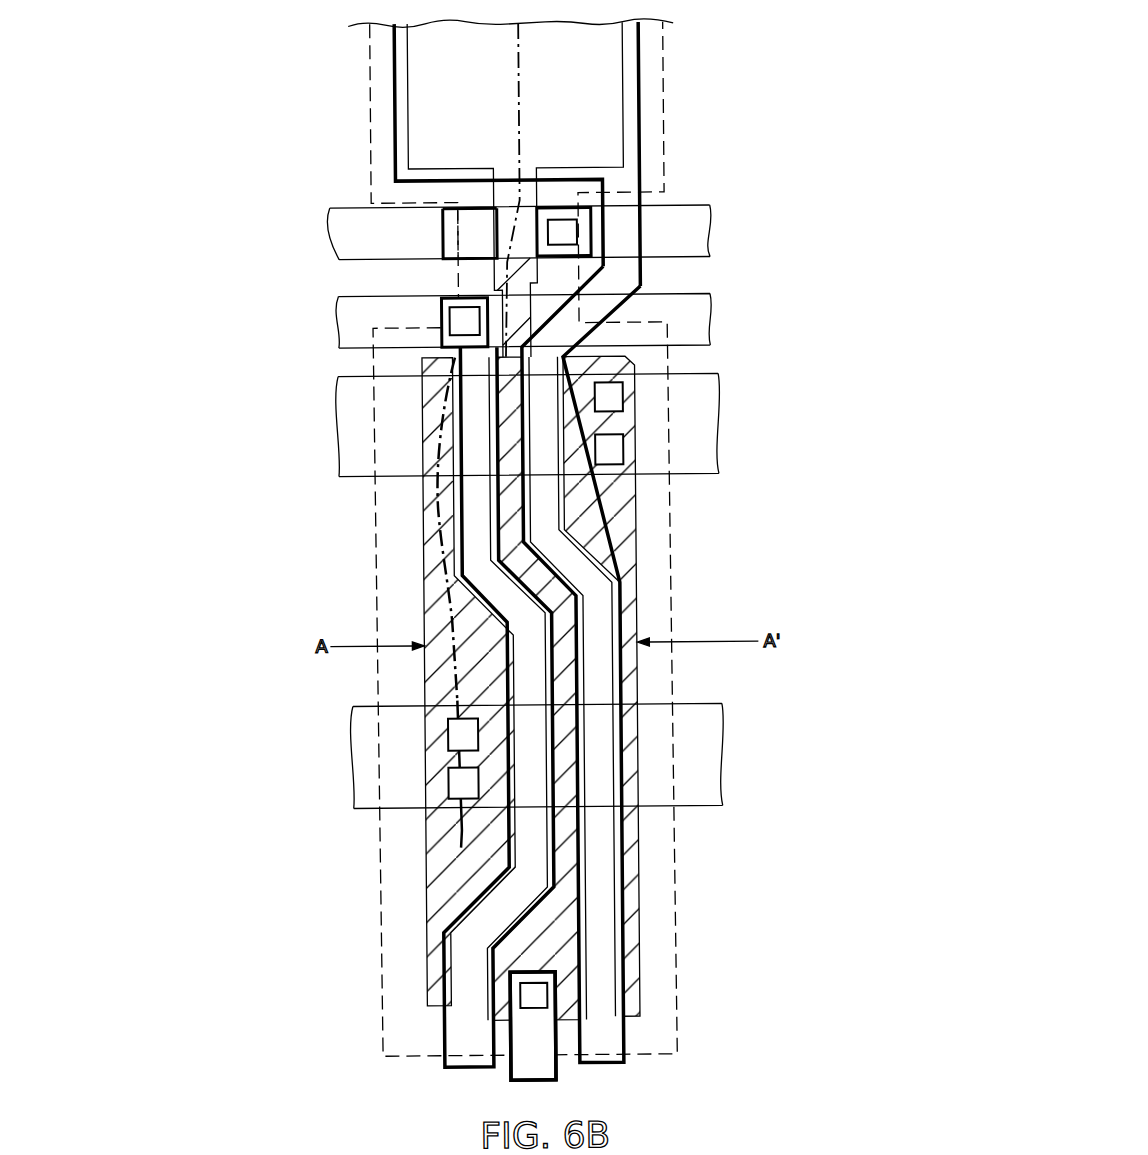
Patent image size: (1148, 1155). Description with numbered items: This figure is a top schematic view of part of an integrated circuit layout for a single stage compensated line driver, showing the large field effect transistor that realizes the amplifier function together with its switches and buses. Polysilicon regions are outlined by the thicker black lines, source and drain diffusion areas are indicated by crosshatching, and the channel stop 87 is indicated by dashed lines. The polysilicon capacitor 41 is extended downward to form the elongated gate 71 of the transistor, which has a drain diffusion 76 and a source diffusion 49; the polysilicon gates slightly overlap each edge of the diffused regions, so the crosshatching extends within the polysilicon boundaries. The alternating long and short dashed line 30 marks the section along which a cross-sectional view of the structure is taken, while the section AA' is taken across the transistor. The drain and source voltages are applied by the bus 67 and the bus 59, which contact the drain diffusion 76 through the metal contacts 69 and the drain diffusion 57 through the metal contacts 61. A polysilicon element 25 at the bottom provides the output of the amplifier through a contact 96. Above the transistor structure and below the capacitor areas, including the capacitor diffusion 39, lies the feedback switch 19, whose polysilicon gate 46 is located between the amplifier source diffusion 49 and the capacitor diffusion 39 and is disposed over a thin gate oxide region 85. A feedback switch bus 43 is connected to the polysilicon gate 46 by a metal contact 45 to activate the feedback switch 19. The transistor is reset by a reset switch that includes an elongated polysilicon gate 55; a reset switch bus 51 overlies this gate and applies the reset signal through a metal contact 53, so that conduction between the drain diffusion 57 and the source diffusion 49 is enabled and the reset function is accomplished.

The feedback switch 19 is at (732, 223).
The polysilicon element 25 is at (538, 1068).
The alternating long and short dashed line 30 is at (519, 102).
The capacitor diffusion 39 is at (627, 73).
The polysilicon capacitor 41 is at (644, 114).
The feedback switch bus 43 is at (690, 236).
The metal contact 45 is at (572, 210).
The polysilicon gate 46 is at (457, 204).
The source diffusion 49 is at (500, 285).
The reset switch bus 51 is at (697, 323).
The metal contact 53 is at (468, 316).
The elongated polysilicon gate 55 is at (446, 338).
The drain diffusion 57 is at (430, 881).
The bus 59 is at (713, 706).
The metal contacts 61 is at (452, 784).
The bus 67 is at (693, 412).
The metal contacts 69 is at (616, 451).
The elongated gate 71 is at (631, 611).
The drain diffusion 76 is at (629, 536).
The thin gate oxide region 85 is at (500, 238).
The channel stop 87 is at (366, 966).
The contact 96 is at (532, 1000).